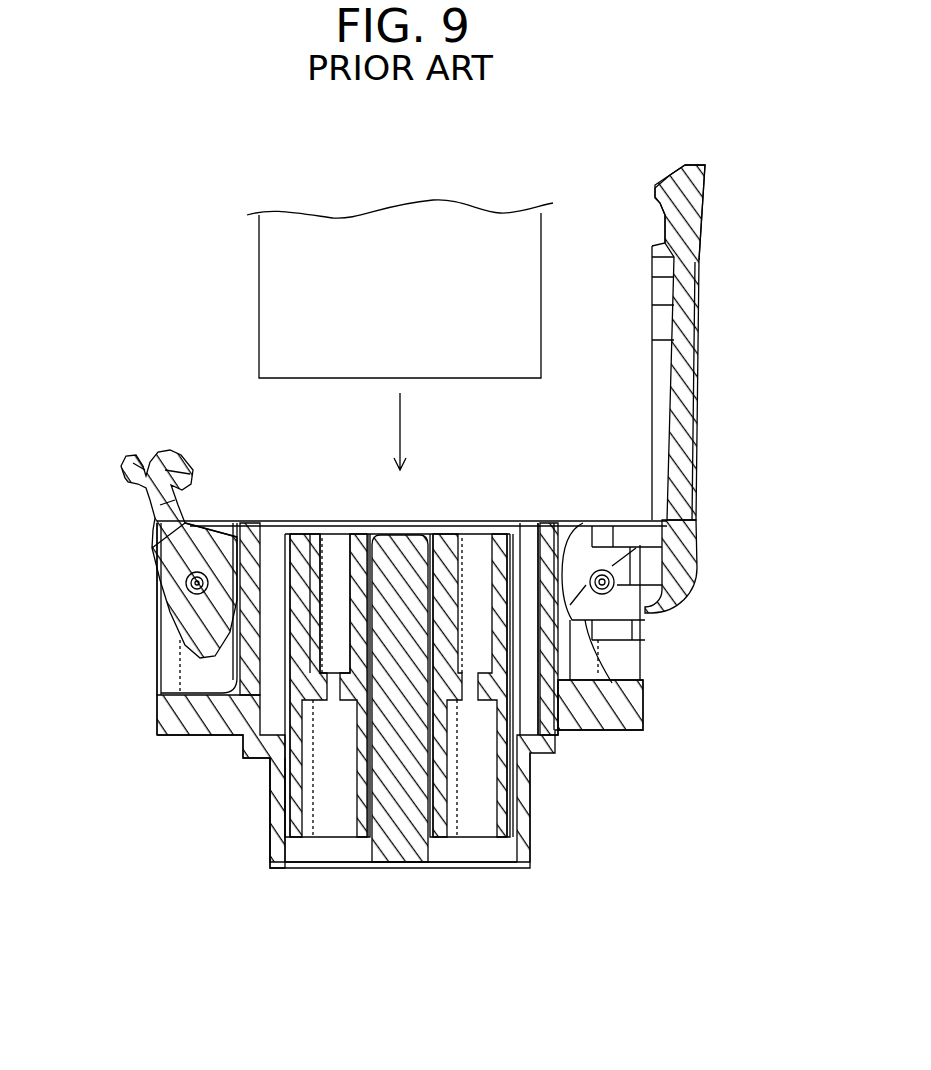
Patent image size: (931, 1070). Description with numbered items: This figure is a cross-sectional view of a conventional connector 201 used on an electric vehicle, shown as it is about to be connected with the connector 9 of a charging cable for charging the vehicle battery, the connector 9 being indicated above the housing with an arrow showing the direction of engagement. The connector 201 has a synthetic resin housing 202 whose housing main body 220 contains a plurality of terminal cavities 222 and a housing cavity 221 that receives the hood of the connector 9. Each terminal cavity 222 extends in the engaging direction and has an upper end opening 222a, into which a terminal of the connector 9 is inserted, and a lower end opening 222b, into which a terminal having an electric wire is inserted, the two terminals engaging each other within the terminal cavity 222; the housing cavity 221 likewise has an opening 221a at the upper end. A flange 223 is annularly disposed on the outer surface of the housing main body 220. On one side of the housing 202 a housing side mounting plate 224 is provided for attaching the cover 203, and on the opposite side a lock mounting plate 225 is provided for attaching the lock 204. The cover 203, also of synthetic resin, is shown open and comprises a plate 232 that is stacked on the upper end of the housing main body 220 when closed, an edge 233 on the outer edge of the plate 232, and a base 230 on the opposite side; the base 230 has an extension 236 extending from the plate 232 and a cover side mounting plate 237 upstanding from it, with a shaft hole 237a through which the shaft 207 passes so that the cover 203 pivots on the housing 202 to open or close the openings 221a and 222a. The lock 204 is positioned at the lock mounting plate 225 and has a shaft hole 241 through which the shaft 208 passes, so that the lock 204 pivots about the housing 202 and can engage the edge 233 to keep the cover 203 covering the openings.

The connector of a charging cable 9 is at (252, 262).
The connector 201 is at (135, 707).
The housing 202 is at (270, 805).
The cover 203 is at (699, 497).
The lock 204 is at (151, 564).
The shaft 207 is at (614, 580).
The shaft 208 is at (153, 594).
The housing main body 220 is at (532, 829).
The housing cavity 221 is at (534, 690).
The opening 221a is at (528, 527).
The terminal cavity 222 is at (357, 793).
The upper end opening 222a is at (333, 522).
The lower end opening 222b is at (460, 863).
The flange 223 is at (190, 733).
The housing side mounting plate 224 is at (625, 658).
The lock mounting plate 225 is at (177, 667).
The base 230 is at (645, 639).
The plate 232 is at (696, 325).
The edge 233 is at (700, 185).
The extension 236 is at (634, 590).
The cover side mounting plate 237 is at (643, 680).
The shaft hole 237a is at (573, 550).
The shaft hole 241 is at (208, 540).